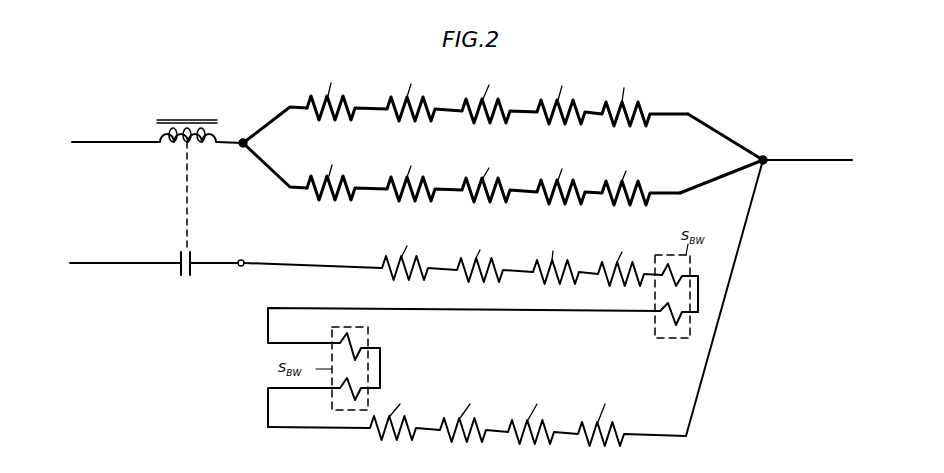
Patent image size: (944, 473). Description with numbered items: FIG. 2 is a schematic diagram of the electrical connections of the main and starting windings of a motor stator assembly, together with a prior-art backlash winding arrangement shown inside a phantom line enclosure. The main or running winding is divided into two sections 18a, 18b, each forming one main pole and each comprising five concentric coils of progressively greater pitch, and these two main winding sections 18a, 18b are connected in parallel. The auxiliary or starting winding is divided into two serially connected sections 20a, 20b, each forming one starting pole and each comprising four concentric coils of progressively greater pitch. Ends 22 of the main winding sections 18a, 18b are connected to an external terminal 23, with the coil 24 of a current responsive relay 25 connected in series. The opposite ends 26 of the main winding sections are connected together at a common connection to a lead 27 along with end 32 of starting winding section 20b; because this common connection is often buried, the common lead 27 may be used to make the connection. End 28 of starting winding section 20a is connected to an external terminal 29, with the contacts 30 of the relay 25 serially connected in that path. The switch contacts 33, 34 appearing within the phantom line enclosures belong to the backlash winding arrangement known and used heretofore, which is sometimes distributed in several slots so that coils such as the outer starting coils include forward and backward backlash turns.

The main winding section 18a is at (664, 85).
The main winding section 18b is at (692, 212).
The starting winding section 20a is at (473, 228).
The starting winding section 20b is at (529, 381).
The ends of main winding sections 22 is at (275, 168).
The external terminal 23 is at (243, 148).
The coil of current responsive relay 24 is at (173, 148).
The current responsive relay 25 is at (163, 202).
The ends of main winding sections 26 is at (685, 187).
The common lead 27 is at (811, 158).
The end of starting winding section 28 is at (312, 262).
The external terminal 29 is at (240, 268).
The contacts of relay 30 is at (187, 276).
The end of starting winding section 32 is at (733, 288).
The switch contact 33 is at (672, 280).
The switch contact 34 is at (670, 318).